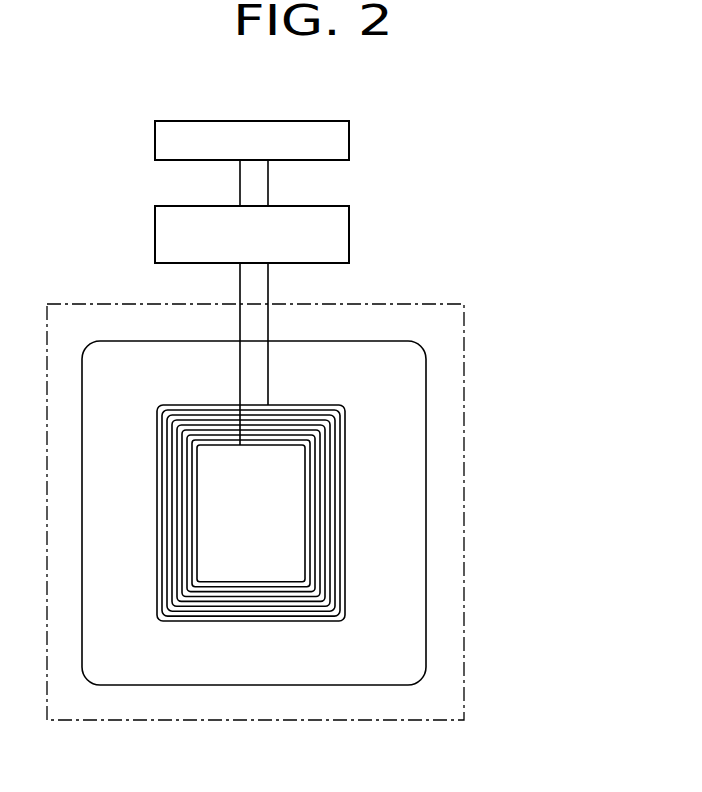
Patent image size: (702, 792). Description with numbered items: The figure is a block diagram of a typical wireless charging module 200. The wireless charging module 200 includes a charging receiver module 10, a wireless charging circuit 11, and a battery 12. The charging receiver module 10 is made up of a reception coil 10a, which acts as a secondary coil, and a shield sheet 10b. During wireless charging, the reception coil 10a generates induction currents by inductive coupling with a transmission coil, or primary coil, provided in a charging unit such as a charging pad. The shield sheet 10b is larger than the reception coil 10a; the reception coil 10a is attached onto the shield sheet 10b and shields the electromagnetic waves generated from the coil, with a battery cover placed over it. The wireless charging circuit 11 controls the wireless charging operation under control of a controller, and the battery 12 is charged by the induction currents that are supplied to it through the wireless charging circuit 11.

The wireless charging module 200 is at (508, 258).
The battery 12 is at (349, 138).
The wireless charging circuit 11 is at (349, 237).
The charging receiver module 10 is at (464, 374).
The reception coil 10a is at (347, 473).
The shield sheet 10b is at (402, 540).